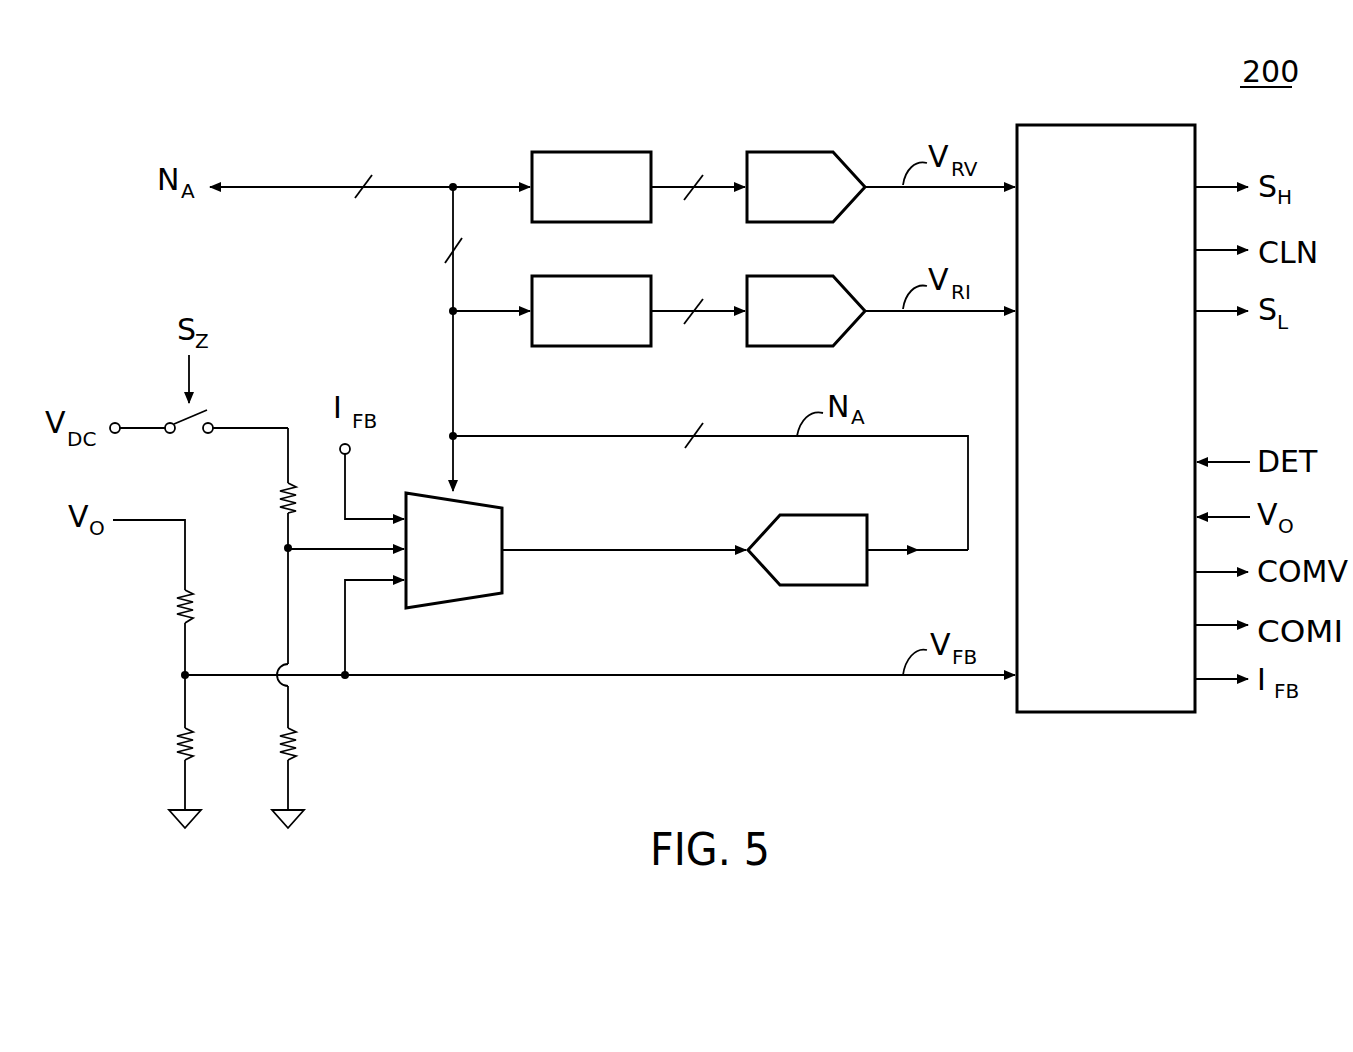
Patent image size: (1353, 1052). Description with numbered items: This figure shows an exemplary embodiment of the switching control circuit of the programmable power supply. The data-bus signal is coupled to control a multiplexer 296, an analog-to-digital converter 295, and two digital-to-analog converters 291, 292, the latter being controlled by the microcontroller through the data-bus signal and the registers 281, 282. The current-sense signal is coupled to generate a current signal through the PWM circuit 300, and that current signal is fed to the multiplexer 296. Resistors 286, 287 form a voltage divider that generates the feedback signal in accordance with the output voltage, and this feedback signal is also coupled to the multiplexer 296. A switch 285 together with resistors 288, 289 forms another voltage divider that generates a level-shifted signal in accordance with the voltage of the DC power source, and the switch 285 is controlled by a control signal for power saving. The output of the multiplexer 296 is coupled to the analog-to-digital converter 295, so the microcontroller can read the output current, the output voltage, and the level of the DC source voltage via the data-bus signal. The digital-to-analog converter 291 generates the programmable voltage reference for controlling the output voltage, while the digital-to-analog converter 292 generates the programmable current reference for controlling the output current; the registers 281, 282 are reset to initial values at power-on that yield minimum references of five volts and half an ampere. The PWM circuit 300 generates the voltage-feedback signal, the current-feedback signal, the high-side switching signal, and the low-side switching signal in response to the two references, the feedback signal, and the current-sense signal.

The register 281 is at (592, 152).
The register 282 is at (592, 276).
The digital-to-analog converter 291 is at (790, 152).
The digital-to-analog converter 292 is at (790, 276).
The analog-to-digital converter 295 is at (823, 515).
The multiplexer 296 is at (482, 505).
The PWM circuit 300 is at (1107, 125).
The switch 285 is at (190, 438).
The resistor 286 is at (170, 610).
The resistor 287 is at (170, 747).
The resistor 288 is at (270, 500).
The resistor 289 is at (272, 747).